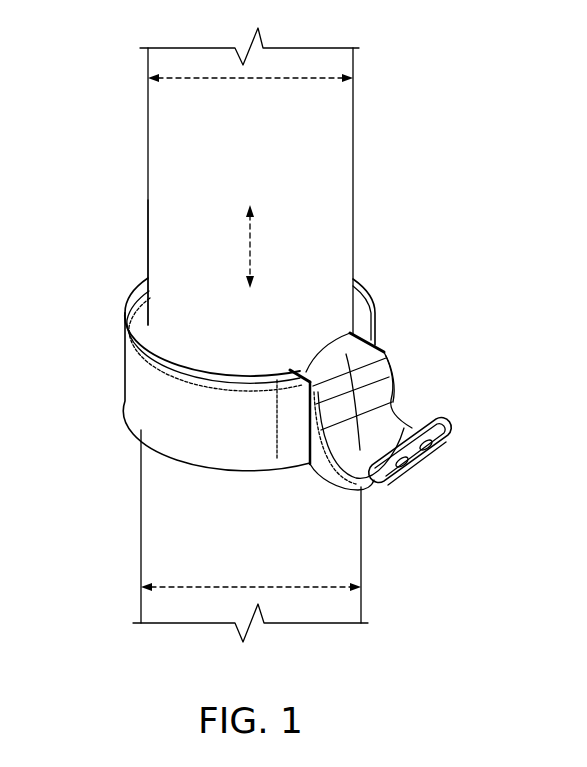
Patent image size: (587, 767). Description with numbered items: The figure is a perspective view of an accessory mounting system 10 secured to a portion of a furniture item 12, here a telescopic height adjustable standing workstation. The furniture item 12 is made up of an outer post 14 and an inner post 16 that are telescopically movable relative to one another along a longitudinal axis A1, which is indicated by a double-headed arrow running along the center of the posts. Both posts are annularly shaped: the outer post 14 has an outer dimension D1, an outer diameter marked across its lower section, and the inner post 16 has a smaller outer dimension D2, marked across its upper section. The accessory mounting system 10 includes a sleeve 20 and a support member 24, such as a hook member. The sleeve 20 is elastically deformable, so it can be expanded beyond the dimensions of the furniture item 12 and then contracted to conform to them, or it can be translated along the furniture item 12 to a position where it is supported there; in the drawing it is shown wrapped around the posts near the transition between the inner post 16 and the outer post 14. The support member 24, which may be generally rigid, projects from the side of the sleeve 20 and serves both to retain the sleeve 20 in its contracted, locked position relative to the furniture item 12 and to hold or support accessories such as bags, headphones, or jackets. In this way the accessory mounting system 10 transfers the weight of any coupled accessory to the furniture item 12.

The accessory mounting system 10 is at (259, 360).
The furniture item 12 is at (365, 106).
The outer post 14 is at (157, 477).
The inner post 16 is at (162, 260).
The sleeve 20 is at (142, 372).
The support member 24 is at (368, 367).
The outer dimension D1 is at (180, 588).
The outer dimension D2 is at (184, 78).
The axis A1 is at (247, 240).